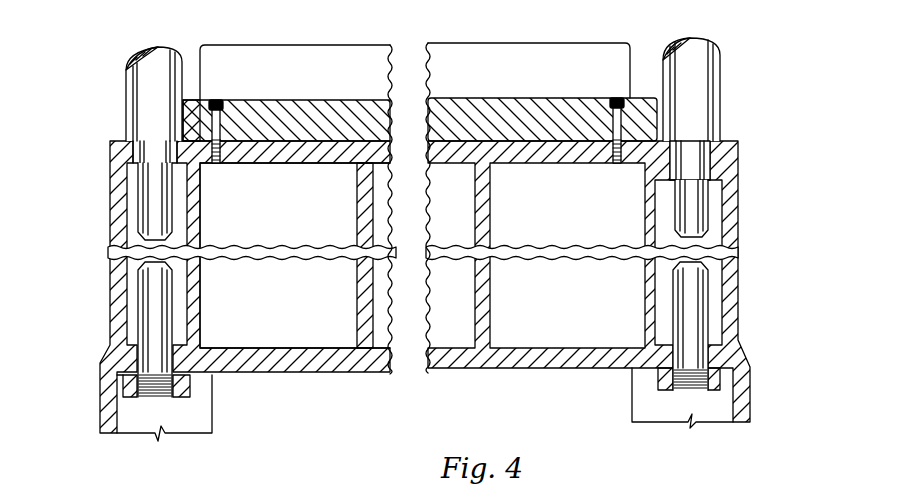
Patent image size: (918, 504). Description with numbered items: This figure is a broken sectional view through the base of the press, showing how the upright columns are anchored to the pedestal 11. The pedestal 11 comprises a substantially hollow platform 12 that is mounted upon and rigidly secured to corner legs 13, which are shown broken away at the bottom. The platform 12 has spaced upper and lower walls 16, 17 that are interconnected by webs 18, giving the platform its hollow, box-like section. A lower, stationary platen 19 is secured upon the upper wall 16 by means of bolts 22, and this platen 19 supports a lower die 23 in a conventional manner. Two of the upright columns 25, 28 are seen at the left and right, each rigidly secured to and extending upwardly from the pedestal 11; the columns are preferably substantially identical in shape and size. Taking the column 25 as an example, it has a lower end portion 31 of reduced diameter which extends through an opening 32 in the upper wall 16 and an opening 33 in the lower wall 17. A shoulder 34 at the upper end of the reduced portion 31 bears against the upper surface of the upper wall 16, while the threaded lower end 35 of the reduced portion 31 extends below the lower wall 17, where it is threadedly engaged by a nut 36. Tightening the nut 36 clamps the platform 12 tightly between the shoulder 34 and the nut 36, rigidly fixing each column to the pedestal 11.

The pedestal 11 is at (111, 311).
The platform 12 is at (335, 373).
The corner legs 13 is at (100, 430).
The upper wall 16 is at (291, 166).
The lower wall 17 is at (271, 356).
The webs 18 is at (362, 280).
The lower stationary platen 19 is at (280, 118).
The bolts 22 is at (225, 114).
The lower die 23 is at (525, 63).
The upright column 25 is at (722, 75).
The upright column 28 is at (122, 82).
The lower end portion of reduced diameter 31 is at (697, 203).
The opening in upper wall 32 is at (739, 155).
The opening in lower wall 33 is at (703, 350).
The shoulder 34 is at (712, 140).
The threaded lower end 35 is at (672, 392).
The nut 36 is at (660, 380).